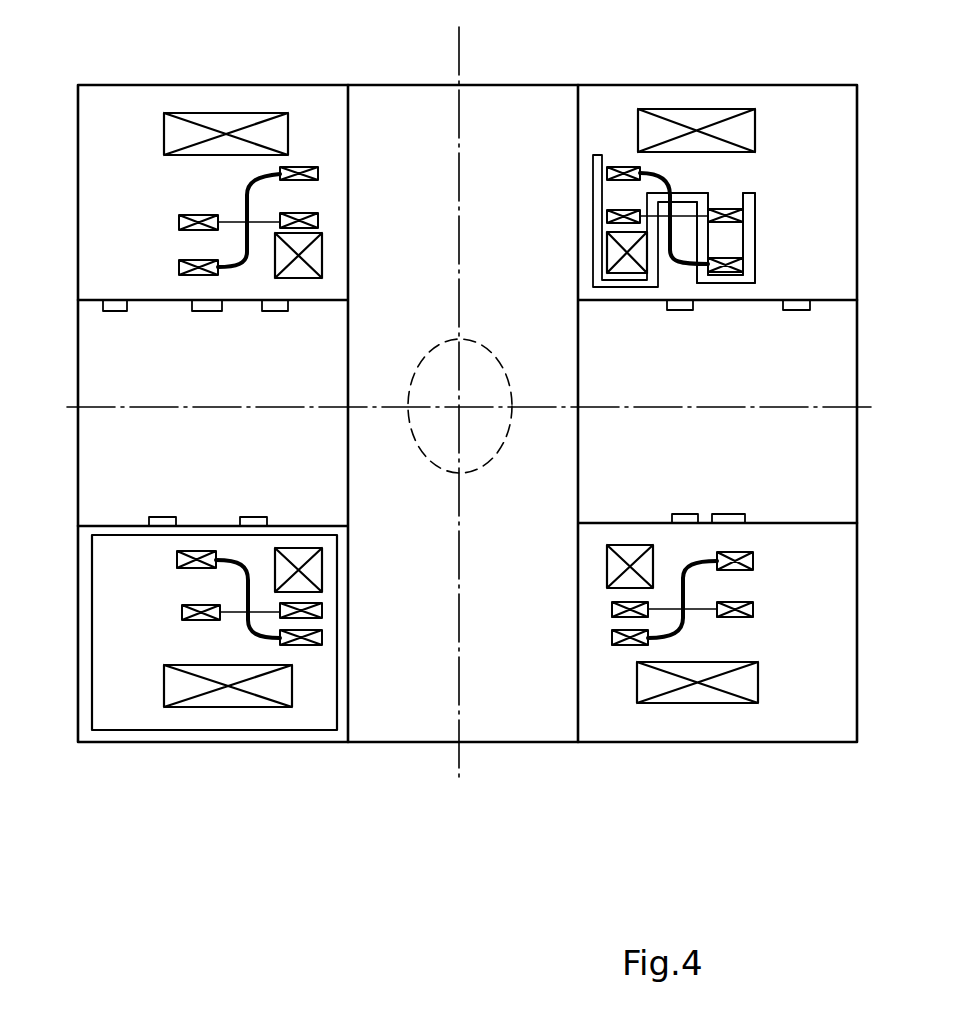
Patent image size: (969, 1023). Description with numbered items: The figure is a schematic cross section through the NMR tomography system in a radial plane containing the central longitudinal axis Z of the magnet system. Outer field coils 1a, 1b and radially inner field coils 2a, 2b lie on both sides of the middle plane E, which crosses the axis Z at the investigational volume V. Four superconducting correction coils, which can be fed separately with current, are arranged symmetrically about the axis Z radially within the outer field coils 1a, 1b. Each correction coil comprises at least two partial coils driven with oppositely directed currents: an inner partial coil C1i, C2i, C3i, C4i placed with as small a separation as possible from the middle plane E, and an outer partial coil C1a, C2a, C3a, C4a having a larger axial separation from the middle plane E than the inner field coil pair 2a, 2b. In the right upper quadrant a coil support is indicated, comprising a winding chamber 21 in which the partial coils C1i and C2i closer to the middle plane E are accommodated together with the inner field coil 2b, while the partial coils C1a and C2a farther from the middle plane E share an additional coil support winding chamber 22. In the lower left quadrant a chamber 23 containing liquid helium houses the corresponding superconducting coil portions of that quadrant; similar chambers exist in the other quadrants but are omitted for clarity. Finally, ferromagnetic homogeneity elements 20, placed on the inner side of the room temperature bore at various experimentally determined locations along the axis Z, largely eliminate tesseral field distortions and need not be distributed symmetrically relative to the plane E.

The outer field coil 1a is at (205, 118).
The outer field coil 1b is at (668, 115).
The inner field coil 2a is at (320, 256).
The inner field coil 2b is at (607, 253).
The partial coil C1i is at (622, 210).
The partial coil C2i is at (573, 777).
The partial coil C3i is at (367, 765).
The partial coil C4i is at (320, 221).
The partial coil C1a is at (880, 632).
The partial coil C2a is at (753, 560).
The partial coil C3a is at (60, 595).
The partial coil C4a is at (60, 655).
The ferromagnetic homogeneity elements 20 is at (273, 317).
The winding chamber 21 is at (627, 288).
The coil support winding chamber 22 is at (742, 284).
The chamber having liquid helium 23 is at (92, 703).
The investigational volume V is at (515, 400).
The central longitudinal axis Z is at (257, 410).
The middle plane E is at (460, 778).